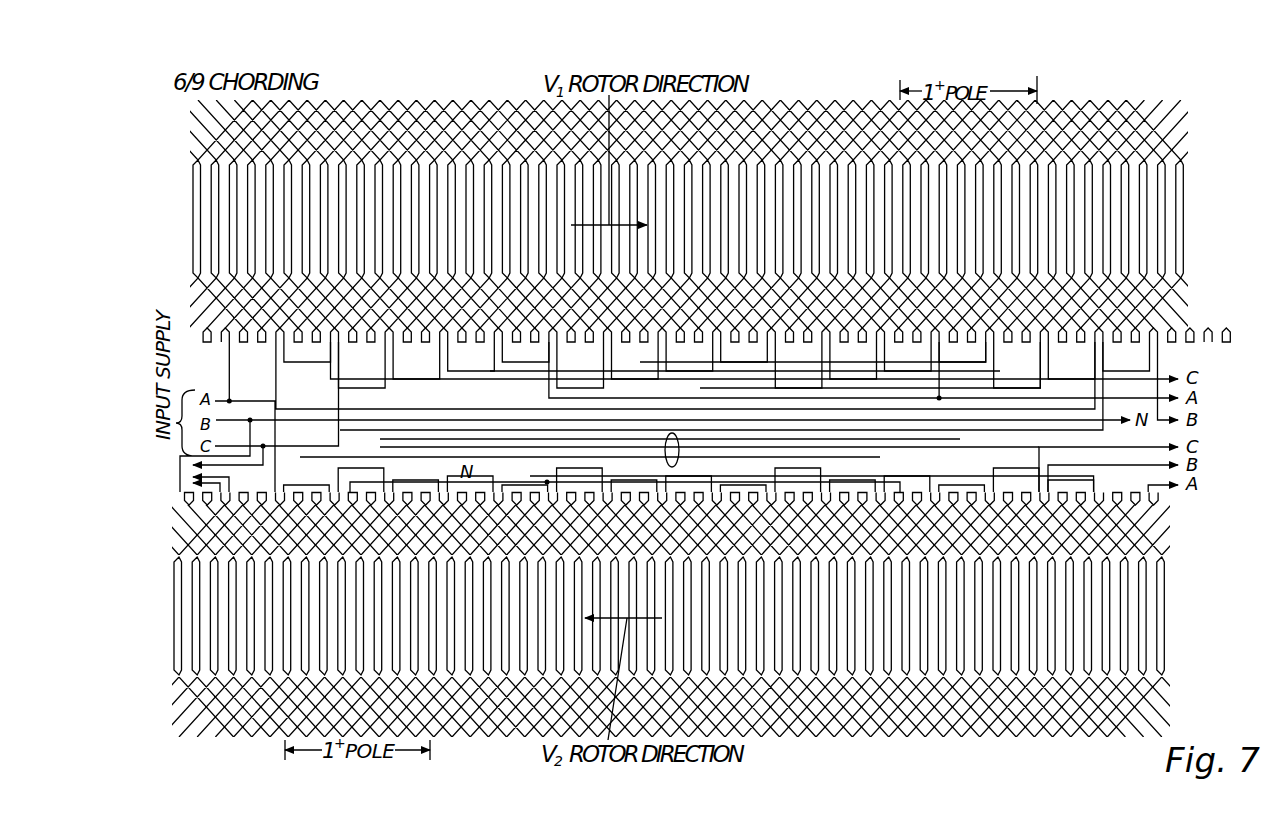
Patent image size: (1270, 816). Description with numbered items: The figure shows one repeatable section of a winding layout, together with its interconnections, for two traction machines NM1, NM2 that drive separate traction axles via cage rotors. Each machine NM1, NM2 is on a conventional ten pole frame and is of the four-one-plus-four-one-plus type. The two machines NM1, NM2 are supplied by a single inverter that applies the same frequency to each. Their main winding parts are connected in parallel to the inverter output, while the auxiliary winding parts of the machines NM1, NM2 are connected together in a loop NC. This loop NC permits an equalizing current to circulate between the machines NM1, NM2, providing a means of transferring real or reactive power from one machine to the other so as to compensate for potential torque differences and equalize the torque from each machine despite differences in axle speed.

The first machine NM1 is at (480, 98).
The second machine NM2 is at (980, 748).
The loop NC is at (667, 433).